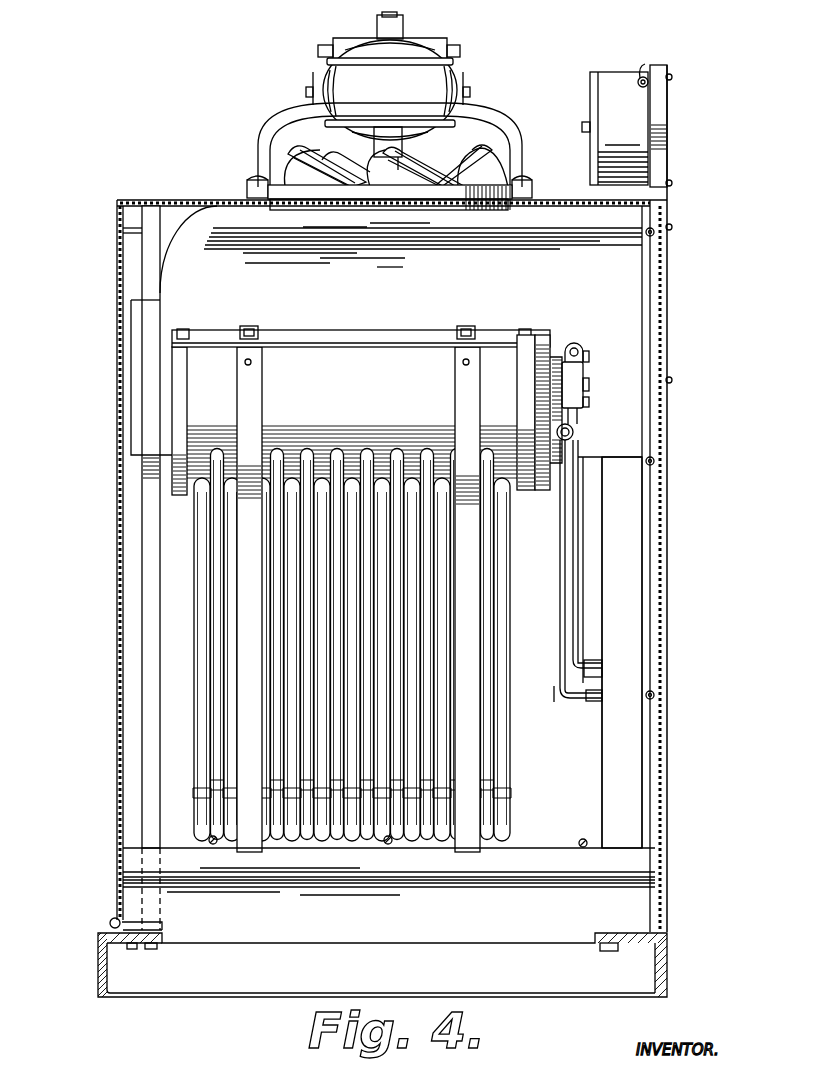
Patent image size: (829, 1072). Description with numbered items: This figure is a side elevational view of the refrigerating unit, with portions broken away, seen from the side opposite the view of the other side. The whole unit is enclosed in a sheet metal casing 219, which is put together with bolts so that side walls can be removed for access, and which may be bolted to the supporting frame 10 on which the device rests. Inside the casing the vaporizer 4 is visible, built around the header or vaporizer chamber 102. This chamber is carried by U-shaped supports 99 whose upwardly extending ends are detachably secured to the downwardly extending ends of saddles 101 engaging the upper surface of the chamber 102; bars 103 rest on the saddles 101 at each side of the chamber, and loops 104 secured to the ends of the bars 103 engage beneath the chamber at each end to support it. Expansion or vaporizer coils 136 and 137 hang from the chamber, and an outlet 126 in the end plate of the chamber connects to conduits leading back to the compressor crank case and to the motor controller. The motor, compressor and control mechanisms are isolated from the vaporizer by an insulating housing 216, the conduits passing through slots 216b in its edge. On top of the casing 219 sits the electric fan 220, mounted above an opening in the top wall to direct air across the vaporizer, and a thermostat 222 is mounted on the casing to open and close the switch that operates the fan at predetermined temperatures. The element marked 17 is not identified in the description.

The vaporizer 4 is at (344, 421).
The supporting frame 10 is at (382, 965).
The fan and arch support 17 is at (537, 214).
The U-shaped supports 99 is at (245, 376).
The saddles 101 is at (249, 326).
The header or vaporizer chamber 102 is at (314, 350).
The bars 103 is at (377, 345).
The loops 104 is at (527, 366).
The outlet 126 is at (573, 391).
The expansion or vaporizer coils 136 is at (322, 455).
The expansion or vaporizer coils 137 is at (398, 456).
The housing 216 is at (592, 782).
The slots 216b is at (600, 700).
The sheet metal casing 219 is at (117, 652).
The electric fan 220 is at (388, 76).
The thermostat 222 is at (625, 118).